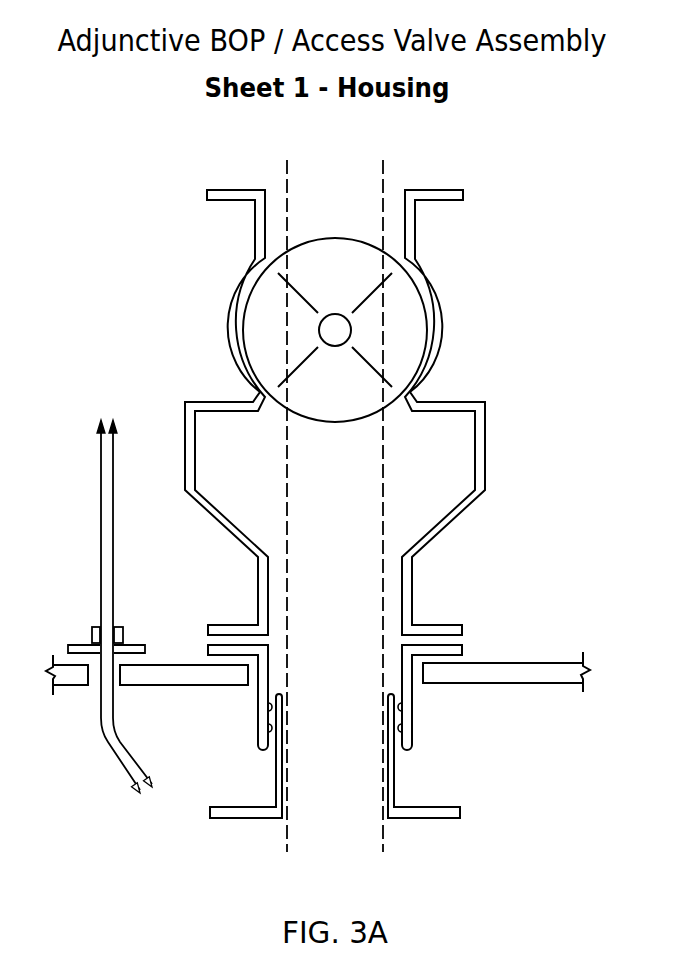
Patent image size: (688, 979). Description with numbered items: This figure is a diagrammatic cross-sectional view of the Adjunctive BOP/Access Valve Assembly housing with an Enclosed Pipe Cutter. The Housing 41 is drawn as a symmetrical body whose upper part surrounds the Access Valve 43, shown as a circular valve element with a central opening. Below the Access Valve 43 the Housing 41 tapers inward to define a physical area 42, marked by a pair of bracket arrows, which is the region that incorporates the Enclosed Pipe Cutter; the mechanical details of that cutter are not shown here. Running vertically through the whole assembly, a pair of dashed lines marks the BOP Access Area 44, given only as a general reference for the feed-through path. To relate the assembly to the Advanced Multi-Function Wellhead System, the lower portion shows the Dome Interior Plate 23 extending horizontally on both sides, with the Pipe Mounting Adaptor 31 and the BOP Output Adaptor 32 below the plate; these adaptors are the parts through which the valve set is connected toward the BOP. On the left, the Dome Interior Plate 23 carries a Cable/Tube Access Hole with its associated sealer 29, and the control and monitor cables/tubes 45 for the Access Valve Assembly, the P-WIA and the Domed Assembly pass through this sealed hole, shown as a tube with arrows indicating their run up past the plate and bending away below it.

The Dome Interior Plate 23 is at (339, 673).
The Cable/Hole Sealer 29 is at (93, 612).
The Pipe Mounting Adaptor 31 is at (423, 718).
The BOP Output Adaptor 32 is at (412, 773).
The Housing 41 is at (461, 528).
The physical area 42 is at (398, 412).
The Access Valve 43 is at (326, 388).
The BOP Access Area 44 is at (342, 851).
The control and monitor cables/tubes 45 is at (124, 596).